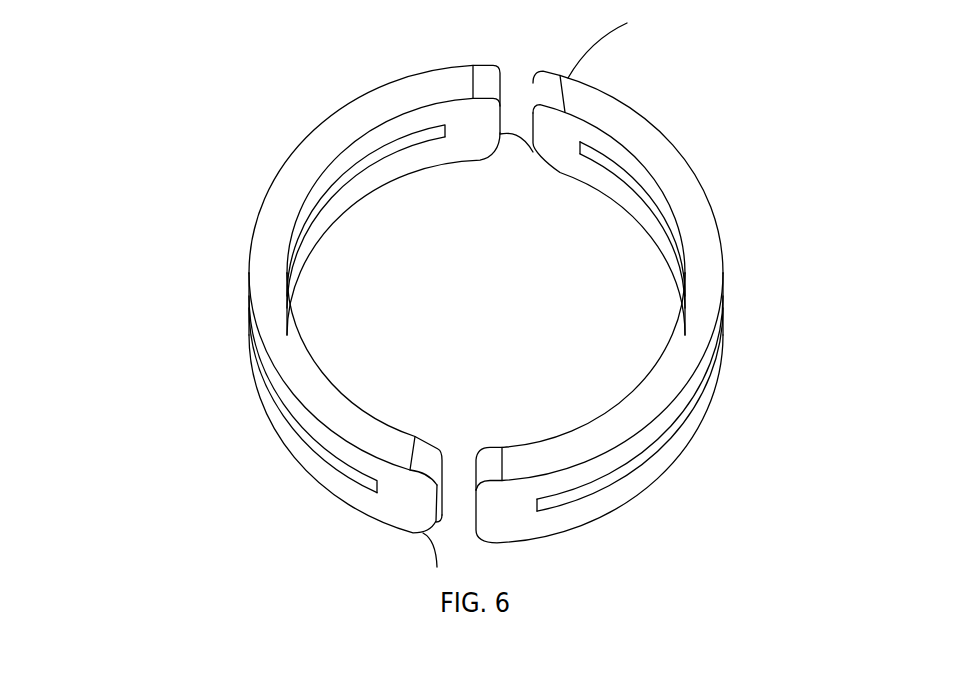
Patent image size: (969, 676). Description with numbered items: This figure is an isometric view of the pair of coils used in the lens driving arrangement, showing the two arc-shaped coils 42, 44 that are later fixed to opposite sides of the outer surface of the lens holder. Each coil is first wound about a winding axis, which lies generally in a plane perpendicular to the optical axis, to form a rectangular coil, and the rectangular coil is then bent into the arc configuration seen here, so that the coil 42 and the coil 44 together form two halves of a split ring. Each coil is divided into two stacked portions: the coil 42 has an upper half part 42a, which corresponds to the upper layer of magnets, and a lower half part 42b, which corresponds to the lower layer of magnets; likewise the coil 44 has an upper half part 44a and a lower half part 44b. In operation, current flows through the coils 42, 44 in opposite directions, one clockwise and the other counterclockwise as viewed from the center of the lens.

The coil 42 is at (276, 299).
The upper half part of the coil 42 42a is at (322, 432).
The lower half part of the coil 42 42b is at (320, 472).
The coil 44 is at (666, 307).
The upper half part of the coil 44 44a is at (658, 433).
The lower half part of the coil 44 44b is at (647, 472).